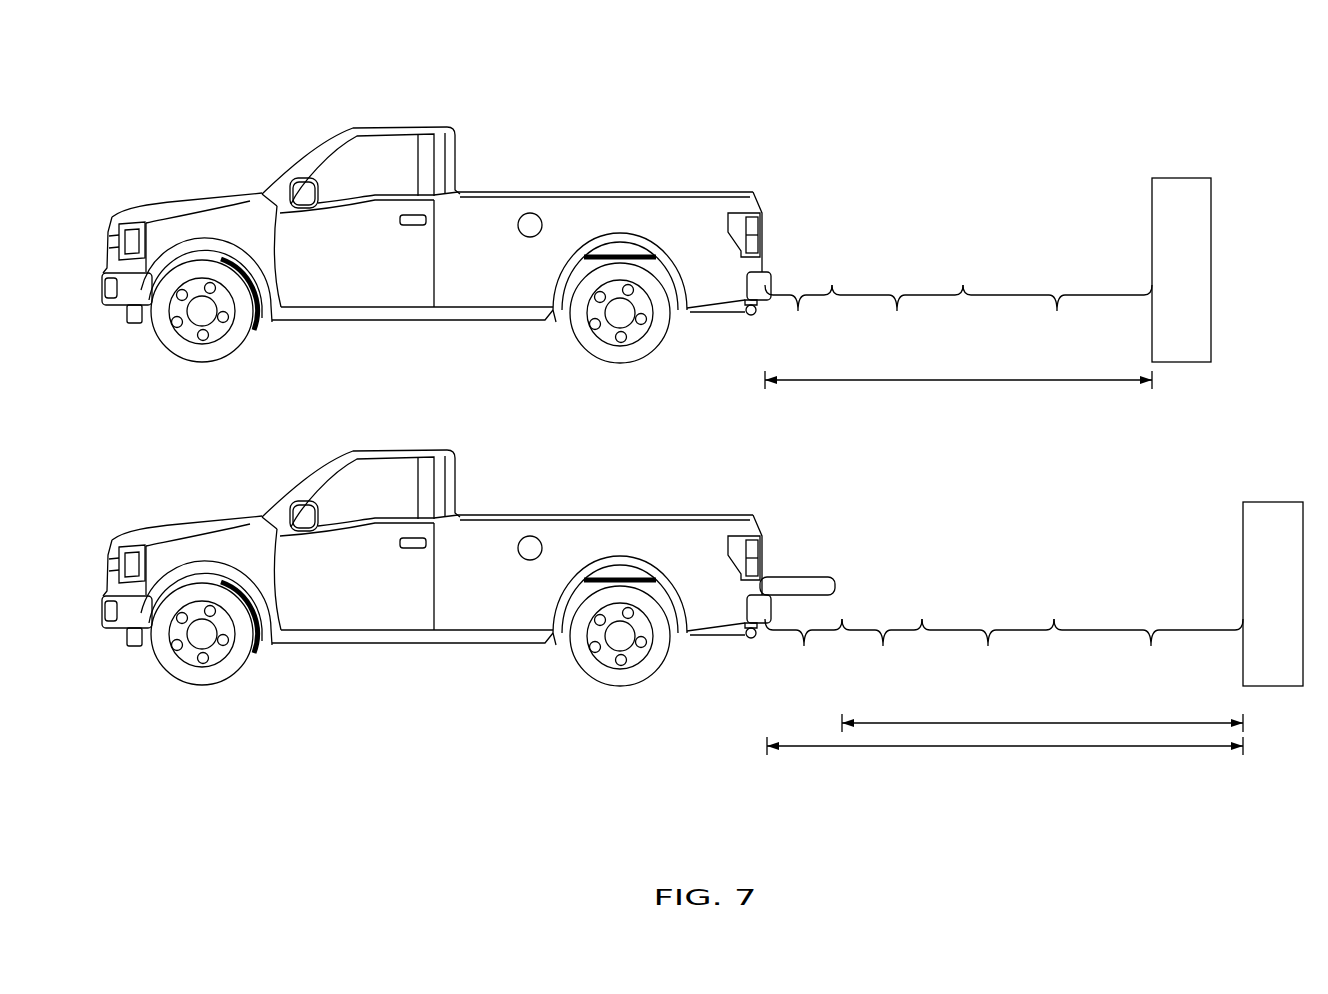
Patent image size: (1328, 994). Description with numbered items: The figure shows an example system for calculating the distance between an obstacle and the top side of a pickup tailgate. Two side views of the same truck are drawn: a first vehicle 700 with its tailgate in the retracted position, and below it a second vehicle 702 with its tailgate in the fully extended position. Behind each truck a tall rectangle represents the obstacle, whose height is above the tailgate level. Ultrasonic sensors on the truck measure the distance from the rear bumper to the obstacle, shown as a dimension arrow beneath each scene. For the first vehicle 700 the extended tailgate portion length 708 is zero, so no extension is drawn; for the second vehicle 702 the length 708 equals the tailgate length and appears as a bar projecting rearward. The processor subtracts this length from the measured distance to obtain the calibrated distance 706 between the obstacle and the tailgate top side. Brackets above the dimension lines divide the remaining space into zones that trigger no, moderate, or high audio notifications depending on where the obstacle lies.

The first vehicle 700 is at (398, 126).
The second vehicle 702 is at (398, 449).
The calibrated distance 706 is at (1074, 721).
The length 708 is at (801, 625).